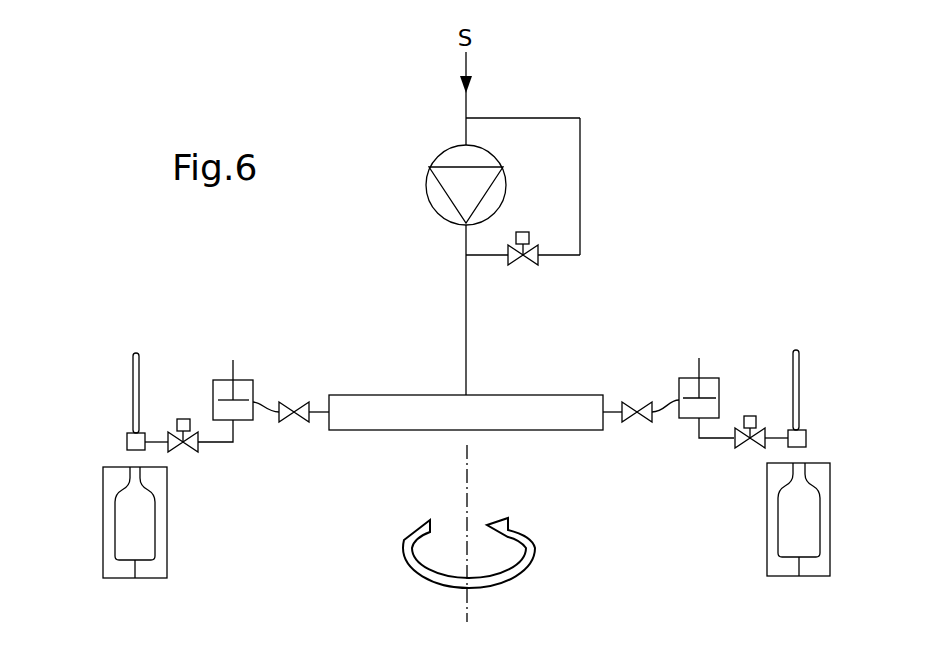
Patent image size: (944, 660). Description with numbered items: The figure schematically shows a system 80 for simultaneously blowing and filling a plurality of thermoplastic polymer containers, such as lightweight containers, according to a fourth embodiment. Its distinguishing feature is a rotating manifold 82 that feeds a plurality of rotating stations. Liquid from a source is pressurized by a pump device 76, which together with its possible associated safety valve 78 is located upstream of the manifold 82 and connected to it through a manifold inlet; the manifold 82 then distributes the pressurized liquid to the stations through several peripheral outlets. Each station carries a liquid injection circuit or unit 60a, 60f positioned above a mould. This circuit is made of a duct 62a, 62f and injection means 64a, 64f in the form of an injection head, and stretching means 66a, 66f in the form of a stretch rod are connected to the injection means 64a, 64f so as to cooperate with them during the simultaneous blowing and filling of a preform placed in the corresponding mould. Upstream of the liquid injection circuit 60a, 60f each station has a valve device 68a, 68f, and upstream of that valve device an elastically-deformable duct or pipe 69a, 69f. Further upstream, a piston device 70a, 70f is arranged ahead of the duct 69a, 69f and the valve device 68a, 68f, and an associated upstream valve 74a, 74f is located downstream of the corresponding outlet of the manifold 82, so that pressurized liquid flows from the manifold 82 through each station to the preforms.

The liquid injection circuit 60a is at (122, 455).
The liquid injection circuit 60f is at (822, 455).
The duct 62a is at (153, 438).
The duct 62f is at (779, 432).
The injection means 64a is at (126, 440).
The injection means 64f is at (806, 437).
The stretching means 66a is at (133, 370).
The stretching means 66f is at (799, 370).
The valve device 68a is at (190, 448).
The valve device 68f is at (745, 447).
The elastically-deformable duct 69a is at (232, 445).
The elastically-deformable duct 69f is at (697, 432).
The piston device 70a is at (213, 387).
The piston device 70f is at (720, 387).
The upstream valve 74a is at (297, 405).
The upstream valve 74f is at (636, 402).
The pump device 76 is at (410, 214).
The safety valve 78 is at (528, 265).
The system 80 is at (696, 139).
The rotating manifold 82 is at (582, 395).